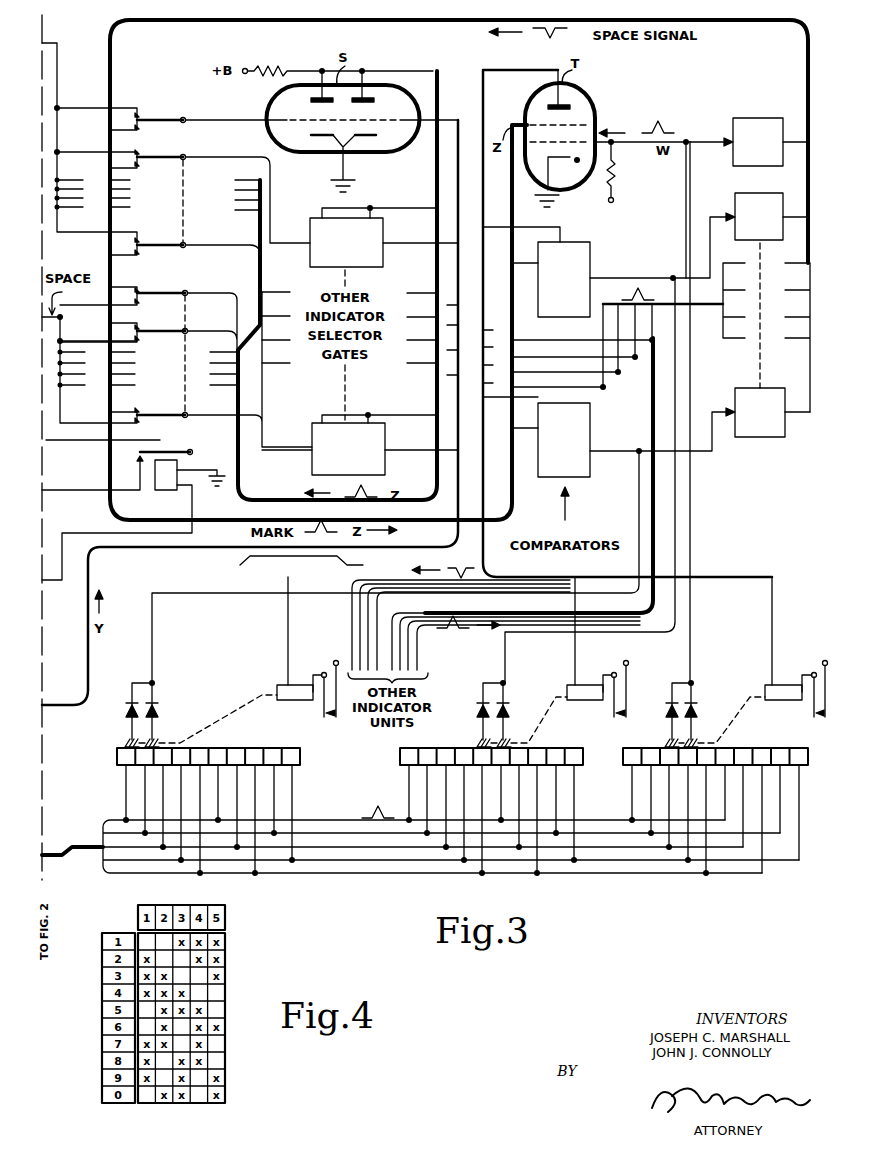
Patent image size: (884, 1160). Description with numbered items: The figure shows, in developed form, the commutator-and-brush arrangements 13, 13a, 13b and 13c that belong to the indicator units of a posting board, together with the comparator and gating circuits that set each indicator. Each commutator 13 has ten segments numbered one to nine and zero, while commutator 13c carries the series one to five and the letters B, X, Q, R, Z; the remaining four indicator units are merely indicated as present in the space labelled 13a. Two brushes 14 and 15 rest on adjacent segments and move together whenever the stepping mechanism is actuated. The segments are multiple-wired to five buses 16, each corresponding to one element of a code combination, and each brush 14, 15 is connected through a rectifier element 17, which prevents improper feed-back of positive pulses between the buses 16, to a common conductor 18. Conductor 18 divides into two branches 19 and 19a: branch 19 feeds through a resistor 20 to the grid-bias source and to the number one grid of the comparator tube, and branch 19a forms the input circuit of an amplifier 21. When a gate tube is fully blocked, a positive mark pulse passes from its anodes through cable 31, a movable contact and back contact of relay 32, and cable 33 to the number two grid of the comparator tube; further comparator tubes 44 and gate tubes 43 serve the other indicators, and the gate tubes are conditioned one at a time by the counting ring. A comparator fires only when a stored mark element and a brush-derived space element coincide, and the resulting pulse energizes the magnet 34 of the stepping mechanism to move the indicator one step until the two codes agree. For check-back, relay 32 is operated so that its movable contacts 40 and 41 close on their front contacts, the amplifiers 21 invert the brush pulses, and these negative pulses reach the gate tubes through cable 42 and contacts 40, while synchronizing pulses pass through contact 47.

The commutator 13 is at (116, 749).
The space for other indicator units 13a is at (372, 733).
The commutator-and-brush arrangement 13b is at (398, 749).
The commutator-and-brush arrangement 13c is at (621, 749).
The brush 14 is at (125, 742).
The brush 15 is at (157, 742).
The buses 16 is at (349, 873).
The rectifier element 17 is at (130, 703).
The conductor 18 is at (222, 593).
The branch 19 is at (628, 145).
The branch 19a is at (698, 146).
The resistor 20 is at (620, 190).
The amplifier 21 is at (765, 118).
The cable 31 is at (280, 497).
The relay 32 is at (160, 490).
The cable 33 is at (415, 520).
The magnet 34 is at (280, 685).
The movable contacts 40 is at (167, 118).
The movable contacts 41 is at (176, 290).
The cable 42 is at (192, 22).
The gate tube 43 is at (360, 340).
The comparator tube 44 is at (536, 352).
The contact 47 is at (160, 447).